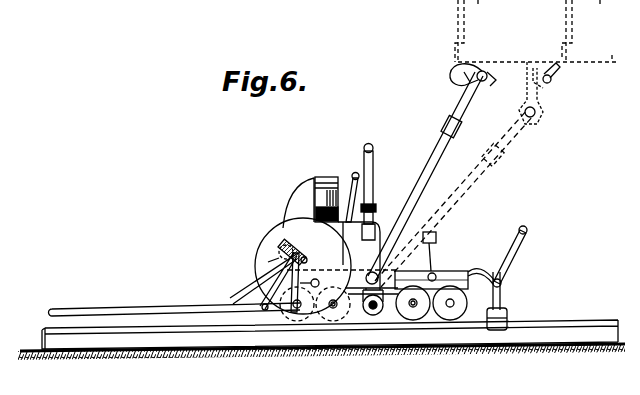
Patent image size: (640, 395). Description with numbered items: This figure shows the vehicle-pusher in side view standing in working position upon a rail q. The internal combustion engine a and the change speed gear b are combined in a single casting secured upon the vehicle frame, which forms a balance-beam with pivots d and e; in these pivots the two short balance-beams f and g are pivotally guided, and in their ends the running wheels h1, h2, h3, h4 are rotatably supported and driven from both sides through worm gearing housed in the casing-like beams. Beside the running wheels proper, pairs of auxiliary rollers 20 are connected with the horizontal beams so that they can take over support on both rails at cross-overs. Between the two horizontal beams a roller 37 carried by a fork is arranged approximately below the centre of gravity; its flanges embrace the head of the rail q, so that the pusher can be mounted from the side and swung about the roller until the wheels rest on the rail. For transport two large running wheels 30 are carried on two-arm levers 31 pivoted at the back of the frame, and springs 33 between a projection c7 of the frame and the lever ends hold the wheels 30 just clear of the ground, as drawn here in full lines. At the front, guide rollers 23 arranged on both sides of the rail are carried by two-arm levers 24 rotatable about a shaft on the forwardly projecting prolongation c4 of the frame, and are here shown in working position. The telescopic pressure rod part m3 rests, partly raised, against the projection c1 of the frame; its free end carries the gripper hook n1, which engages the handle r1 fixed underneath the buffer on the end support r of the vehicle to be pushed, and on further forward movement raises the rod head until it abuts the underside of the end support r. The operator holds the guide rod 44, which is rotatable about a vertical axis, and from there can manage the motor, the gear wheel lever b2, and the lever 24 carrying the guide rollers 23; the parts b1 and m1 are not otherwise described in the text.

The rail q is at (565, 330).
The two-arm levers 31 is at (163, 297).
The pivot e is at (256, 282).
The running wheels 30 is at (290, 248).
The springs 33 is at (300, 250).
The projection of the vehicle frame c7 is at (277, 260).
The internal combustion engine a is at (305, 213).
The gear wheel lever b2 is at (352, 176).
The guide rod 44 is at (373, 162).
The collar b1 is at (376, 208).
The change speed gear b is at (375, 238).
The running wheel h1 is at (290, 322).
The running wheel h2 is at (344, 322).
The running wheel h3 is at (410, 322).
The running wheel h4 is at (451, 322).
The auxiliary running rollers 20 is at (333, 310).
The balance-beam g is at (370, 320).
The roller 37 is at (386, 322).
The pivot d is at (435, 272).
The balance-beam f is at (450, 275).
The projection of the vehicle frame c1 is at (437, 233).
The forwardly projecting prolongation c4 is at (478, 276).
The two arm lever 24 is at (522, 240).
The guide rollers 23 is at (507, 313).
The pressure rod part m3 is at (462, 118).
The boom alternate position m1 is at (487, 162).
The handle r1 is at (452, 70).
The hook n1 is at (538, 114).
The end support r is at (536, 31).